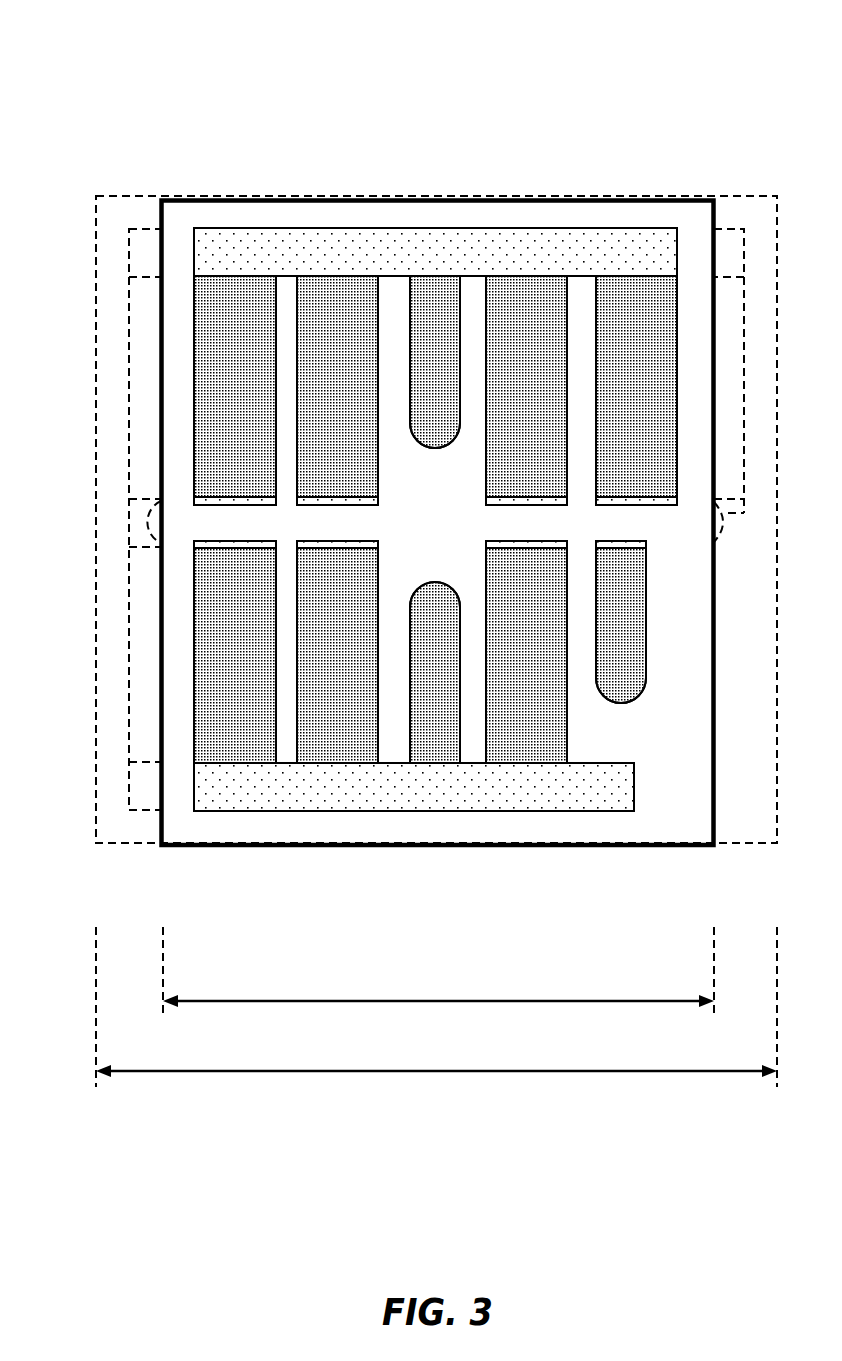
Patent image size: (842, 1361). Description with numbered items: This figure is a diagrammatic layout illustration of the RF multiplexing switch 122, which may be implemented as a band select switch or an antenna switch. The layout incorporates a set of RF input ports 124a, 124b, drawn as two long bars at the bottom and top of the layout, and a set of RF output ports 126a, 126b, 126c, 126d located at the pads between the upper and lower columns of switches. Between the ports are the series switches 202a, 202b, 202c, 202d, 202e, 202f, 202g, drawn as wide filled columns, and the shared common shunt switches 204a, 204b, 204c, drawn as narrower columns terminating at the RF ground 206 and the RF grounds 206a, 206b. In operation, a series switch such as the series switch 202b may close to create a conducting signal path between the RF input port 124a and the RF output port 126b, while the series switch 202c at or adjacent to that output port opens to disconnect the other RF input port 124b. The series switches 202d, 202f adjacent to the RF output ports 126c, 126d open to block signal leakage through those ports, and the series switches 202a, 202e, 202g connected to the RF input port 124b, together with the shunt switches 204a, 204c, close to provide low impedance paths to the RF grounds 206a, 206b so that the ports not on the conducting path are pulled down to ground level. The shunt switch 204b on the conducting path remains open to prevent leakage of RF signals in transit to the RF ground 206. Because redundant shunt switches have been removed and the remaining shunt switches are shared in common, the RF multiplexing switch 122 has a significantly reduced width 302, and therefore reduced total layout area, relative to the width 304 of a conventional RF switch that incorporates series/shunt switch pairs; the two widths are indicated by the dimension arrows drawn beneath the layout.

The RF multiplexing switch 122 is at (160, 54).
The RF input port 124a is at (417, 796).
The RF input port 124b is at (417, 261).
The RF output port 126a is at (616, 533).
The RF output port 126b is at (507, 533).
The RF output port 126c is at (319, 533).
The RF output port 126d is at (219, 533).
The series switch 202a is at (612, 391).
The series switch 202b is at (501, 646).
The series switch 202c is at (501, 391).
The series switch 202d is at (313, 646).
The series switch 202e is at (313, 391).
The series switch 202f is at (213, 646).
The series switch 202g is at (213, 391).
The shunt switch 204a is at (414, 720).
The shunt switch 204b is at (414, 391).
The shunt switch 204c is at (600, 646).
The RF ground 206 is at (418, 618).
The RF ground 206a is at (416, 434).
The RF ground 206b is at (602, 714).
The width 302 is at (460, 1000).
The width 304 is at (472, 1072).